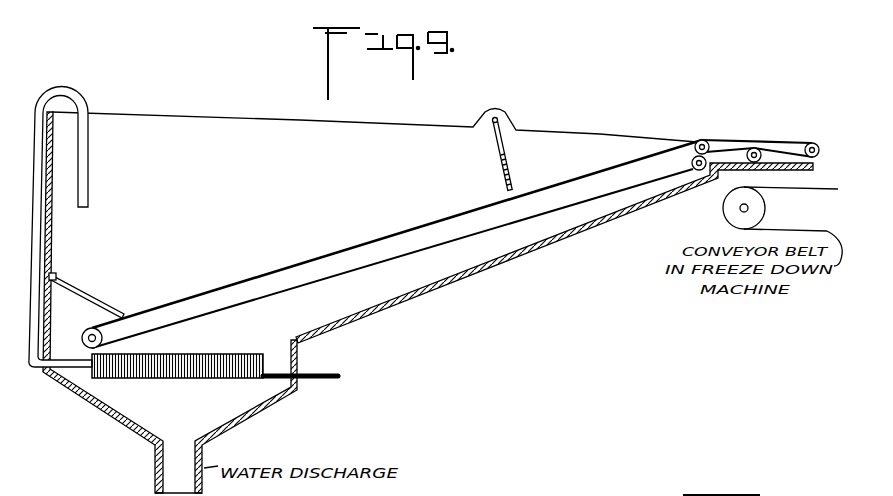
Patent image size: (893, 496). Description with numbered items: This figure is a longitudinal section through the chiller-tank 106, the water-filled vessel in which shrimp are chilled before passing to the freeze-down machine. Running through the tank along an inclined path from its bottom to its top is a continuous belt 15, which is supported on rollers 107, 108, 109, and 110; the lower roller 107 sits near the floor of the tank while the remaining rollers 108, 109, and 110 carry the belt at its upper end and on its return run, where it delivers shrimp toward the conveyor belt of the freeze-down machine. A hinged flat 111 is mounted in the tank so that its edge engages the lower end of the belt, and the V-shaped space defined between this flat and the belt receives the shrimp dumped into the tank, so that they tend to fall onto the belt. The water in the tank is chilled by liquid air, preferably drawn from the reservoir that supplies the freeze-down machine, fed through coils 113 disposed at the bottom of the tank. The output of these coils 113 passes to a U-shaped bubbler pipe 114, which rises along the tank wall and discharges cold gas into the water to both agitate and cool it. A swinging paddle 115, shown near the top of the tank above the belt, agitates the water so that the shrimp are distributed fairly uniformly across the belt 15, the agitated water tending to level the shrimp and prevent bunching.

The continuous belt 15 is at (363, 240).
The chiller-tank 106 is at (467, 277).
The roller 107 is at (93, 330).
The roller 108 is at (700, 140).
The roller 109 is at (831, 130).
The roller 110 is at (755, 147).
The hinged flat 111 is at (78, 290).
The coils 113 is at (263, 366).
The U-shaped bubbler pipe 114 is at (88, 102).
The swinging paddle 115 is at (508, 153).